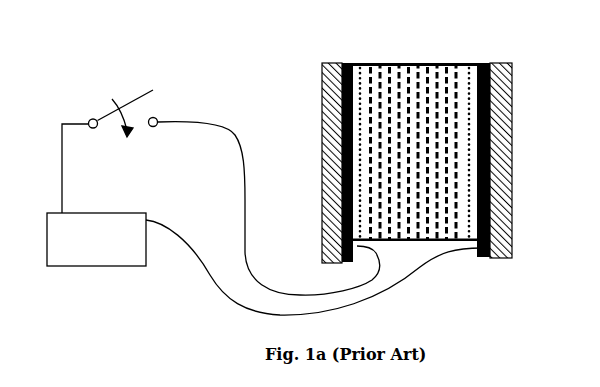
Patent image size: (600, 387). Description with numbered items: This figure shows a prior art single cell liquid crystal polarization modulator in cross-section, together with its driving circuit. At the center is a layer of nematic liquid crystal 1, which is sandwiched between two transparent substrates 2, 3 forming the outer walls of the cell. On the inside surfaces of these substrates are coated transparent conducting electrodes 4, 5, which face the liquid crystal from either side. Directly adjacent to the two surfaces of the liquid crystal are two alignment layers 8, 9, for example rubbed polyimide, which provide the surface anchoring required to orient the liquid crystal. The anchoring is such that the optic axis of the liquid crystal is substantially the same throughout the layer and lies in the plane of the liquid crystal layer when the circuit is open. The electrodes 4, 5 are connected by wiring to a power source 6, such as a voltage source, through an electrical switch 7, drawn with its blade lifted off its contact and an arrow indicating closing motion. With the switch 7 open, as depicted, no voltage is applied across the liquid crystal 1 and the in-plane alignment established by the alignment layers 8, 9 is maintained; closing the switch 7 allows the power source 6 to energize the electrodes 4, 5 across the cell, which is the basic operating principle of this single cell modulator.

The nematic liquid crystal layer 1 is at (407, 100).
The transparent substrate 2 is at (325, 65).
The transparent substrate 3 is at (497, 65).
The transparent conducting electrode 4 is at (343, 65).
The transparent conducting electrode 5 is at (480, 65).
The power source 6 is at (86, 269).
The electrical switch 7 is at (103, 107).
The alignment layer 8 is at (362, 65).
The alignment layer 9 is at (465, 65).